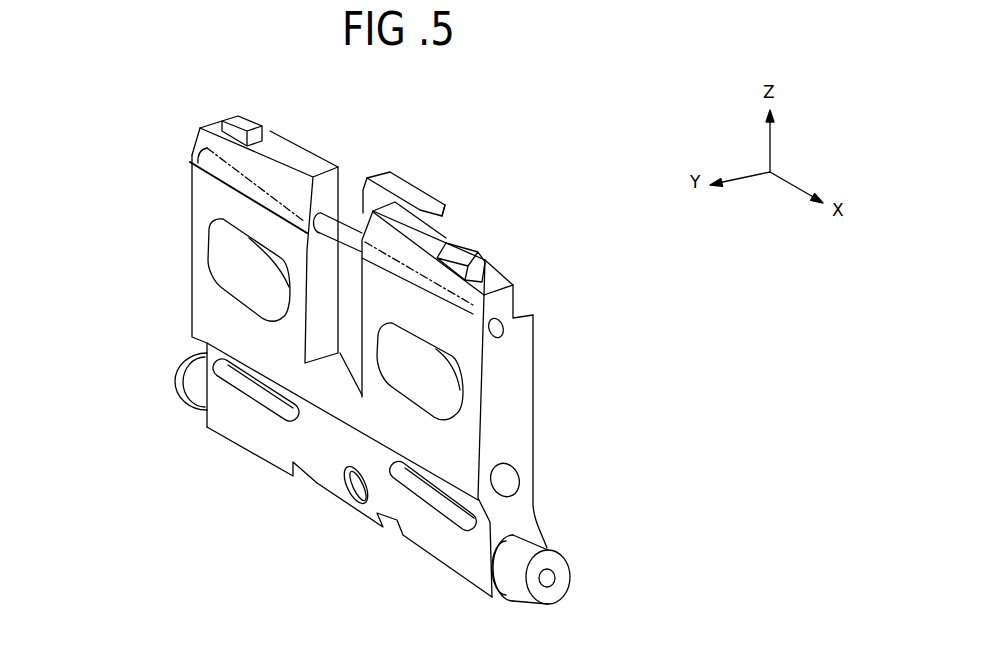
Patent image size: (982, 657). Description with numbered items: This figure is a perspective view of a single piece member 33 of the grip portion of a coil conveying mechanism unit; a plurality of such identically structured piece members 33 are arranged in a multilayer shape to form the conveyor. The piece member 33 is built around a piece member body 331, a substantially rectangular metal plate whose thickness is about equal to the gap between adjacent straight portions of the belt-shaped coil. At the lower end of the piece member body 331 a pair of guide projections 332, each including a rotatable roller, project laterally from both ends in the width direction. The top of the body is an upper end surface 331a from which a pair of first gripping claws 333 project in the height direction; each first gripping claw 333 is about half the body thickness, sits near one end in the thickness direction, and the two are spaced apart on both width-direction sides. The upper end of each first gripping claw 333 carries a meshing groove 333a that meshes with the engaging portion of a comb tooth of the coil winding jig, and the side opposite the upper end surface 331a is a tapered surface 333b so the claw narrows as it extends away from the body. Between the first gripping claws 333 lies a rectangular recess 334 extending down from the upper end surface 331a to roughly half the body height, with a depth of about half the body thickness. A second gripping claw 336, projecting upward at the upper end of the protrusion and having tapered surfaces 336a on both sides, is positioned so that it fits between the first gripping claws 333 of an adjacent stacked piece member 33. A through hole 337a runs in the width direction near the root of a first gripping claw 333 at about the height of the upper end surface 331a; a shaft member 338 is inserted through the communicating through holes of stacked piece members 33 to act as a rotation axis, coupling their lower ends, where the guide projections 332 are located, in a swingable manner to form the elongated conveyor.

The piece member 33 is at (583, 168).
The piece member body 331 is at (522, 407).
The upper end surface 331a is at (520, 310).
The guide projection 332 is at (175, 363).
The first gripping claw 333 is at (288, 148).
The meshing groove 333a is at (240, 130).
The tapered surface 333b is at (203, 140).
The recess 334 is at (320, 300).
The second gripping claw 336 is at (400, 187).
The tapered surface 336a is at (365, 187).
The through hole 337a is at (500, 335).
The shaft member 338 is at (318, 234).